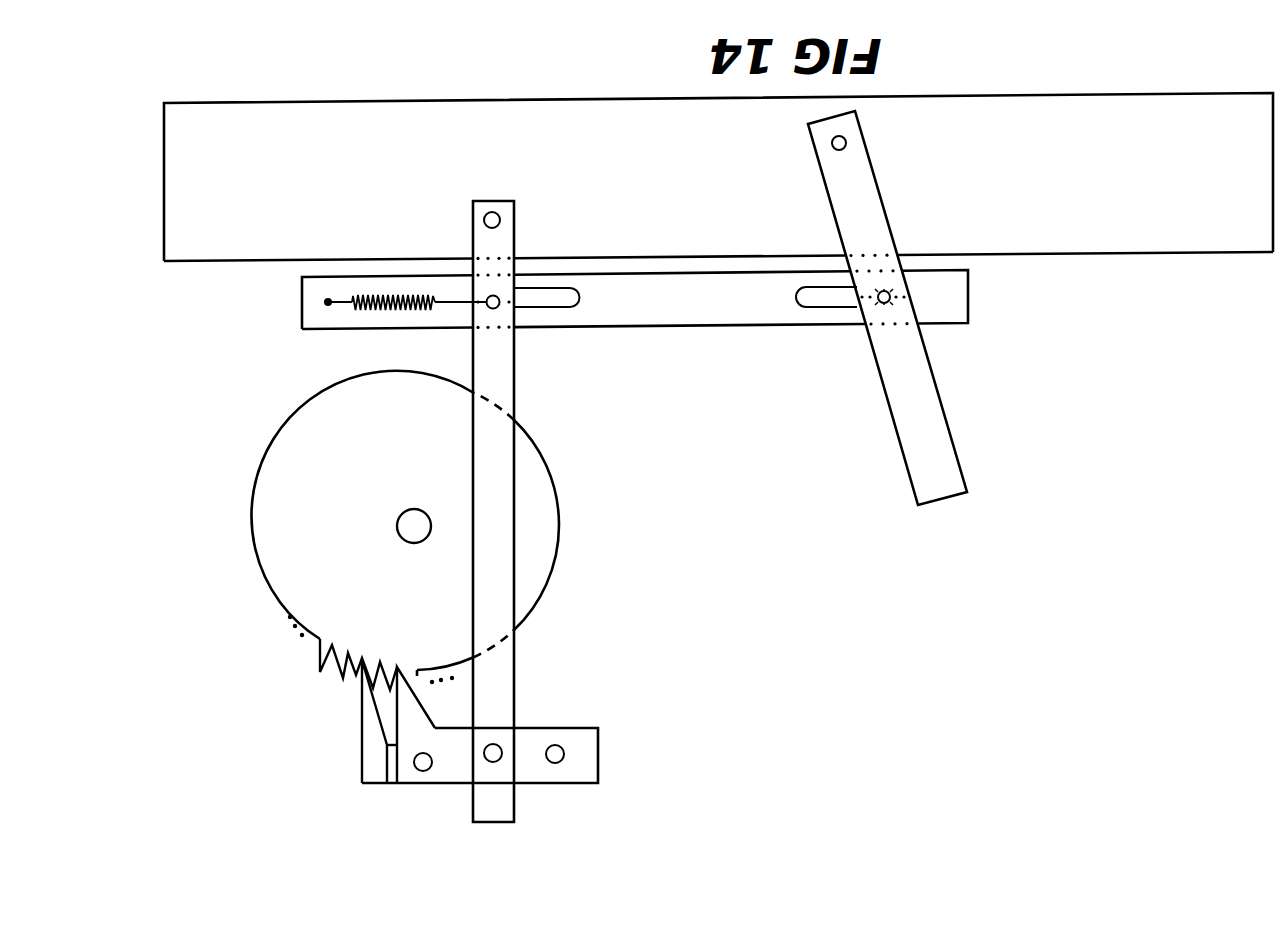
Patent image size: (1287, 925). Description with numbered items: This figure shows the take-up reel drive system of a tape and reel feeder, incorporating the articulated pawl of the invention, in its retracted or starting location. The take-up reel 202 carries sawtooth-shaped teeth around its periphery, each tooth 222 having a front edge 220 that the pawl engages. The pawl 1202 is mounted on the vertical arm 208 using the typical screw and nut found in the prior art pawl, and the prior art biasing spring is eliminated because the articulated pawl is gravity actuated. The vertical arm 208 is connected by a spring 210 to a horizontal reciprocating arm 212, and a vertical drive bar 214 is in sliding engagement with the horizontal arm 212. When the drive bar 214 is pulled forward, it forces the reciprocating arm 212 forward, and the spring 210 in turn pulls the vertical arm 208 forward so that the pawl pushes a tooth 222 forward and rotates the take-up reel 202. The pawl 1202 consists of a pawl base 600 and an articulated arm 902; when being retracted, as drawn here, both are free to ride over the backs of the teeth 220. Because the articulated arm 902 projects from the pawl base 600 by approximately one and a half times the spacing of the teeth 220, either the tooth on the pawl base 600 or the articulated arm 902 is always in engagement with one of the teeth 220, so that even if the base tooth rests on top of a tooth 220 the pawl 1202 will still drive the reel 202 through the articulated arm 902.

The take-up reel 202 is at (270, 504).
The vertical arm 208 is at (497, 805).
The spring 210 is at (392, 298).
The horizontal reciprocating arm 212 is at (745, 325).
The vertical drive bar 214 is at (913, 429).
The front edge of the tooth 220 is at (363, 668).
The tooth 222 is at (362, 680).
The pawl base 600 is at (453, 768).
The articulated arm 902 is at (372, 757).
The pawl 1202 is at (380, 803).